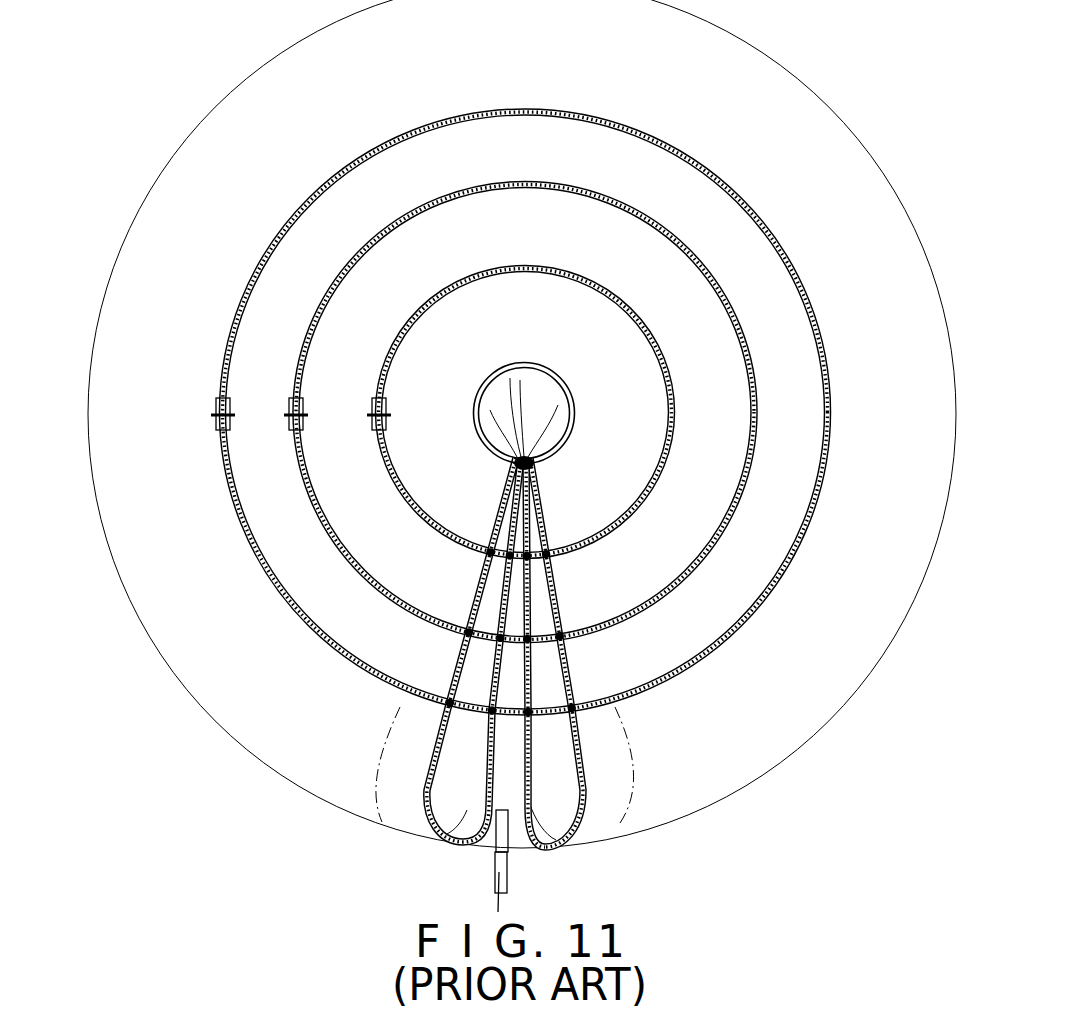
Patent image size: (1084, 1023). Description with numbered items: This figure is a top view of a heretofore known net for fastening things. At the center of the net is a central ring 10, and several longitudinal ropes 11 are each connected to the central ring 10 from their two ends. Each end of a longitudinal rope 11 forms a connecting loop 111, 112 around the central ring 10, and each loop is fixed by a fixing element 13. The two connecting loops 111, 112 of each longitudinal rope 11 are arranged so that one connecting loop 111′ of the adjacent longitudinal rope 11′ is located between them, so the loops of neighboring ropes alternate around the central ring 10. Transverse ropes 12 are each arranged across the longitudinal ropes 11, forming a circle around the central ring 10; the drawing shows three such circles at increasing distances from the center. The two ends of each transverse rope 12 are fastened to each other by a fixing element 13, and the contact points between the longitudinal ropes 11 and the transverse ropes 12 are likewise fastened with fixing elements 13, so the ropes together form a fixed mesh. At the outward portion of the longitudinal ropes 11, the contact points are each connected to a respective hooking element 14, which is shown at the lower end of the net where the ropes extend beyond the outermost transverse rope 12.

The central ring 10 is at (573, 421).
The longitudinal rope 11 is at (558, 620).
The adjacent longitudinal rope 11′ is at (531, 585).
The connecting loop 111 is at (510, 380).
The connecting loop of adjacent longitudinal rope 111′ is at (490, 410).
The connecting loop 112 is at (558, 405).
The transverse rope 12 is at (388, 478).
The fixing element 13 is at (386, 414).
The hooking element 14 is at (509, 863).